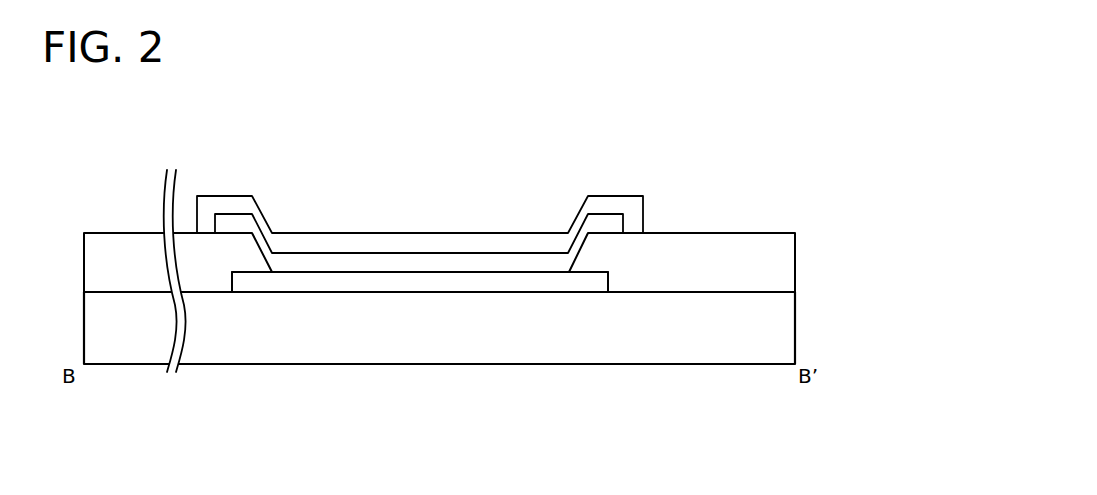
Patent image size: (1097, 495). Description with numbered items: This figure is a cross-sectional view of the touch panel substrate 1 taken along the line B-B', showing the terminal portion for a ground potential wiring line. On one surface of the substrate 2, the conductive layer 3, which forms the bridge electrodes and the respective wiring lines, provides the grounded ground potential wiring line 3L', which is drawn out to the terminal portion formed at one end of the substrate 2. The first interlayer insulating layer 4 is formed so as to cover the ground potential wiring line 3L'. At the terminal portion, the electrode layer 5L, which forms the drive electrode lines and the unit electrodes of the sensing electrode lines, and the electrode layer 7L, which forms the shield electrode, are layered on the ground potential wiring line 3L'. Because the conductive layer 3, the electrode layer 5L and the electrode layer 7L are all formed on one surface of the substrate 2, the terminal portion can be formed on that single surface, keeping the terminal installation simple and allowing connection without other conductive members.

The touch panel substrate 1 is at (459, 257).
The substrate 2 is at (790, 323).
The conductive layer 3 is at (547, 282).
The ground potential wiring line 3L' is at (420, 345).
The first interlayer insulating layer 4 is at (790, 265).
The electrode layer 5L is at (605, 224).
The electrode layer 7L is at (612, 203).